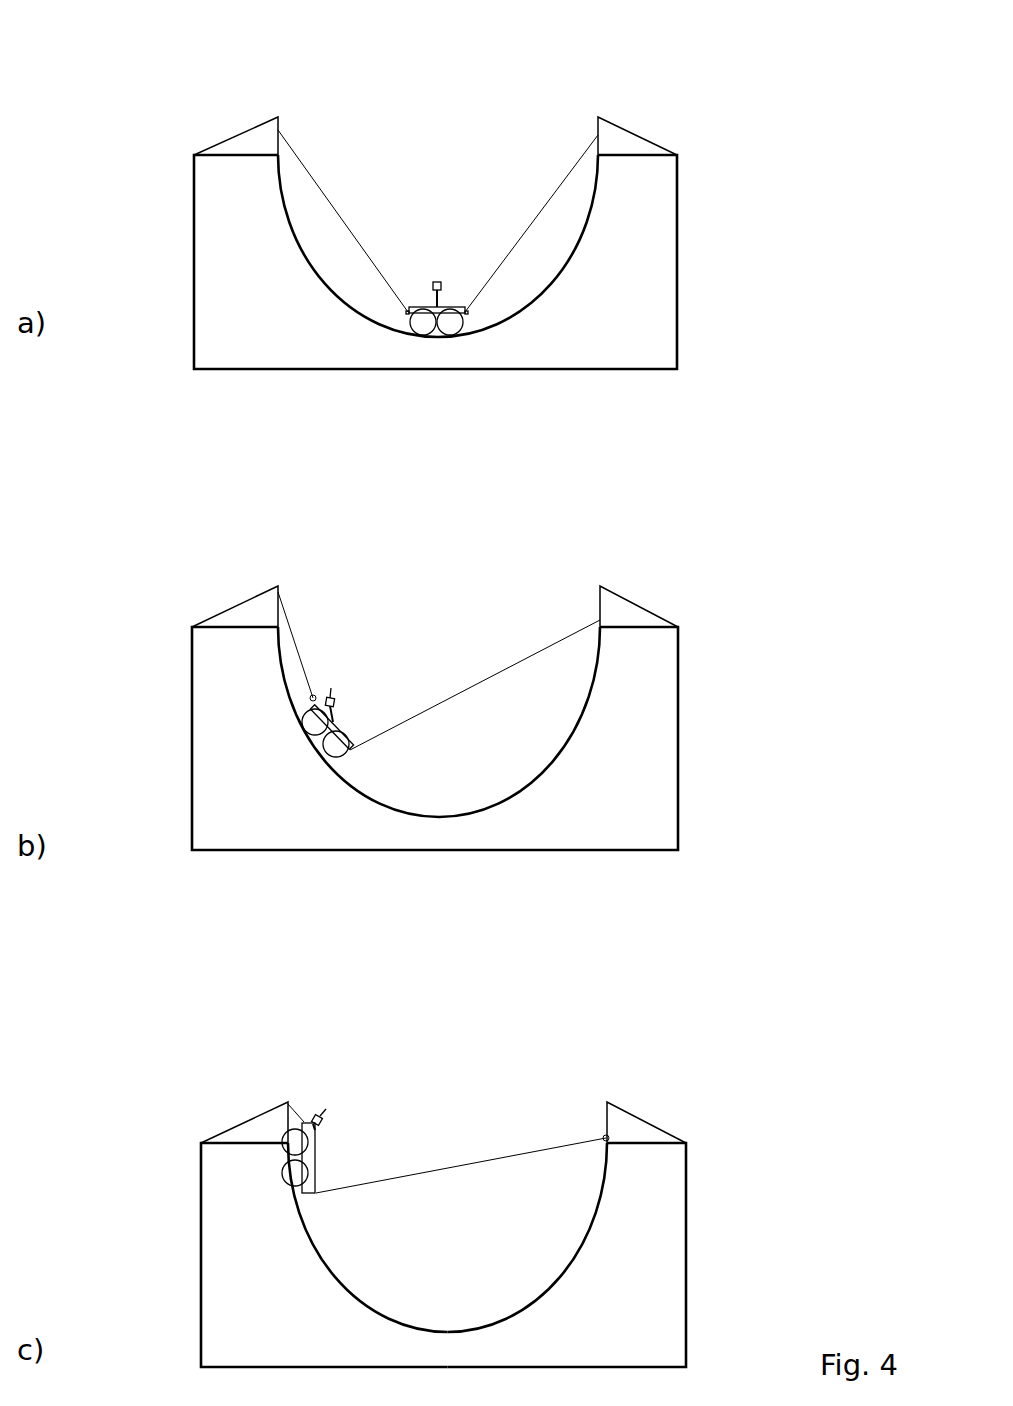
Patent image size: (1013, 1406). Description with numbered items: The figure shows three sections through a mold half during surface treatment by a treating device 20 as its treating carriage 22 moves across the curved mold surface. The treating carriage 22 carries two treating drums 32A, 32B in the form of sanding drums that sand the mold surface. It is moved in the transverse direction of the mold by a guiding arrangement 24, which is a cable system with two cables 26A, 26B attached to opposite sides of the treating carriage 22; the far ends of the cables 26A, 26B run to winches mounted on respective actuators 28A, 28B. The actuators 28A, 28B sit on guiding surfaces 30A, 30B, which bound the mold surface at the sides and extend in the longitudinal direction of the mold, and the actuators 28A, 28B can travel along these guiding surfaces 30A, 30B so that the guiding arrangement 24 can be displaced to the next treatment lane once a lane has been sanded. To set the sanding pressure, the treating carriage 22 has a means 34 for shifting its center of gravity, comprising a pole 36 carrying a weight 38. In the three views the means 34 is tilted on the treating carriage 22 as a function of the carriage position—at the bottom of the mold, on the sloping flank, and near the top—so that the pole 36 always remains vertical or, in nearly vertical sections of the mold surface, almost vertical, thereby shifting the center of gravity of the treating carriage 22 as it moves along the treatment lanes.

The treating device 20 is at (347, 640).
The treating carriage 22 is at (321, 681).
The guiding arrangement 24 is at (431, 640).
The cable 26A is at (295, 152).
The cable 26B is at (573, 170).
The actuator 28A is at (260, 137).
The actuator 28B is at (620, 137).
The guiding surface 30A is at (200, 153).
The guiding surface 30B is at (657, 153).
The treating drum 32A is at (423, 325).
The treating drum 32B is at (458, 323).
The means for shifting the center of gravity 34 is at (438, 302).
The pole 36 is at (437, 302).
The weight 38 is at (436, 282).